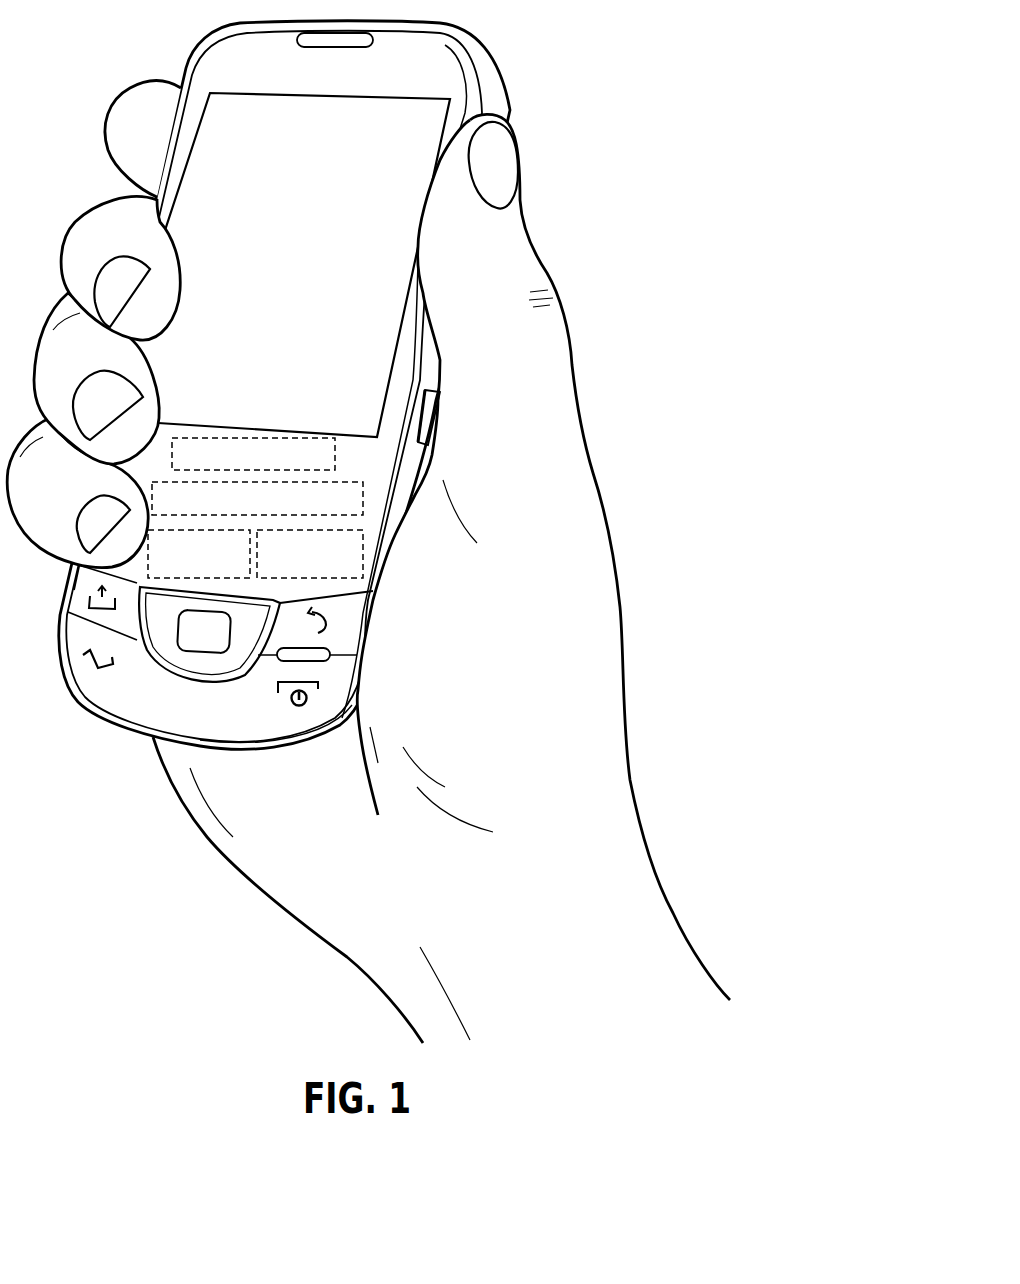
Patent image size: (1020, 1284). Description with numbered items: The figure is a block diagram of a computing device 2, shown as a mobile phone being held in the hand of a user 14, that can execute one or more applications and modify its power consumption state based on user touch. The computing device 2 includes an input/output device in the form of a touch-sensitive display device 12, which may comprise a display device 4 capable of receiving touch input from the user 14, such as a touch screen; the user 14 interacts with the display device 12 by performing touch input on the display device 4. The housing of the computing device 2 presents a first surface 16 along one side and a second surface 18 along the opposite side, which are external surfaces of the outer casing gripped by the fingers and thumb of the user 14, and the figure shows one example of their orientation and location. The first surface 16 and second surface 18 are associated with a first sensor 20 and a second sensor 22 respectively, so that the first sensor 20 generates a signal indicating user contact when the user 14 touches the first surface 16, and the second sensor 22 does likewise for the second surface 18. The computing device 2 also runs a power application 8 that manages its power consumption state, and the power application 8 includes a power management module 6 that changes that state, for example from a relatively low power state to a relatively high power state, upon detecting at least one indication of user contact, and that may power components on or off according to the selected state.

The computing device 2 is at (326, 94).
The display device 4 is at (282, 290).
The power management module 6 is at (360, 508).
The power application 8 is at (326, 463).
The display device 12 is at (448, 117).
The user 14 is at (590, 1016).
The first surface 16 is at (72, 564).
The second surface 18 is at (408, 460).
The first sensor 20 is at (211, 575).
The second sensor 22 is at (323, 575).